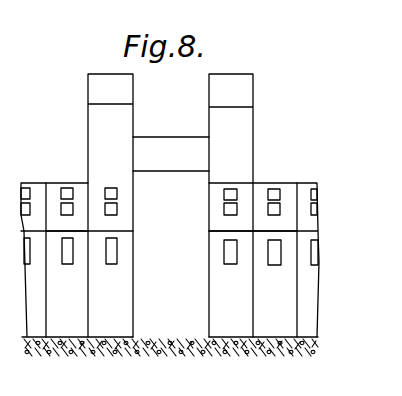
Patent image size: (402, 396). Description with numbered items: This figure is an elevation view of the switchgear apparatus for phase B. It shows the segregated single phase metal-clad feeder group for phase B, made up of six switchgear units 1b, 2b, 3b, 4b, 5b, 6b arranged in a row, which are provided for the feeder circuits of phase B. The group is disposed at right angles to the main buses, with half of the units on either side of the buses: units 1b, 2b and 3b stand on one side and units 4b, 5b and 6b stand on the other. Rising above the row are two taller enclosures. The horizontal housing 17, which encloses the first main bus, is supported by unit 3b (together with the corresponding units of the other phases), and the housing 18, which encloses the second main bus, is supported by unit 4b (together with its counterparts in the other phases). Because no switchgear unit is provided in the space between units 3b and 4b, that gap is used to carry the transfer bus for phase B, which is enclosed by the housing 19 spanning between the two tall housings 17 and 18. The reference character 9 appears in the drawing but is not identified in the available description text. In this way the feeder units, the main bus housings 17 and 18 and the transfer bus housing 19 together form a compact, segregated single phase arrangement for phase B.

The building 9 is at (159, 260).
The horizontal housing 17 is at (88, 92).
The housing 18 is at (253, 96).
The housing 19 is at (182, 129).
The switchgear unit 1b is at (30, 340).
The switchgear unit 2b is at (77, 338).
The switchgear unit 3b is at (116, 338).
The switchgear unit 4b is at (232, 338).
The switchgear unit 5b is at (276, 338).
The switchgear unit 6b is at (310, 338).